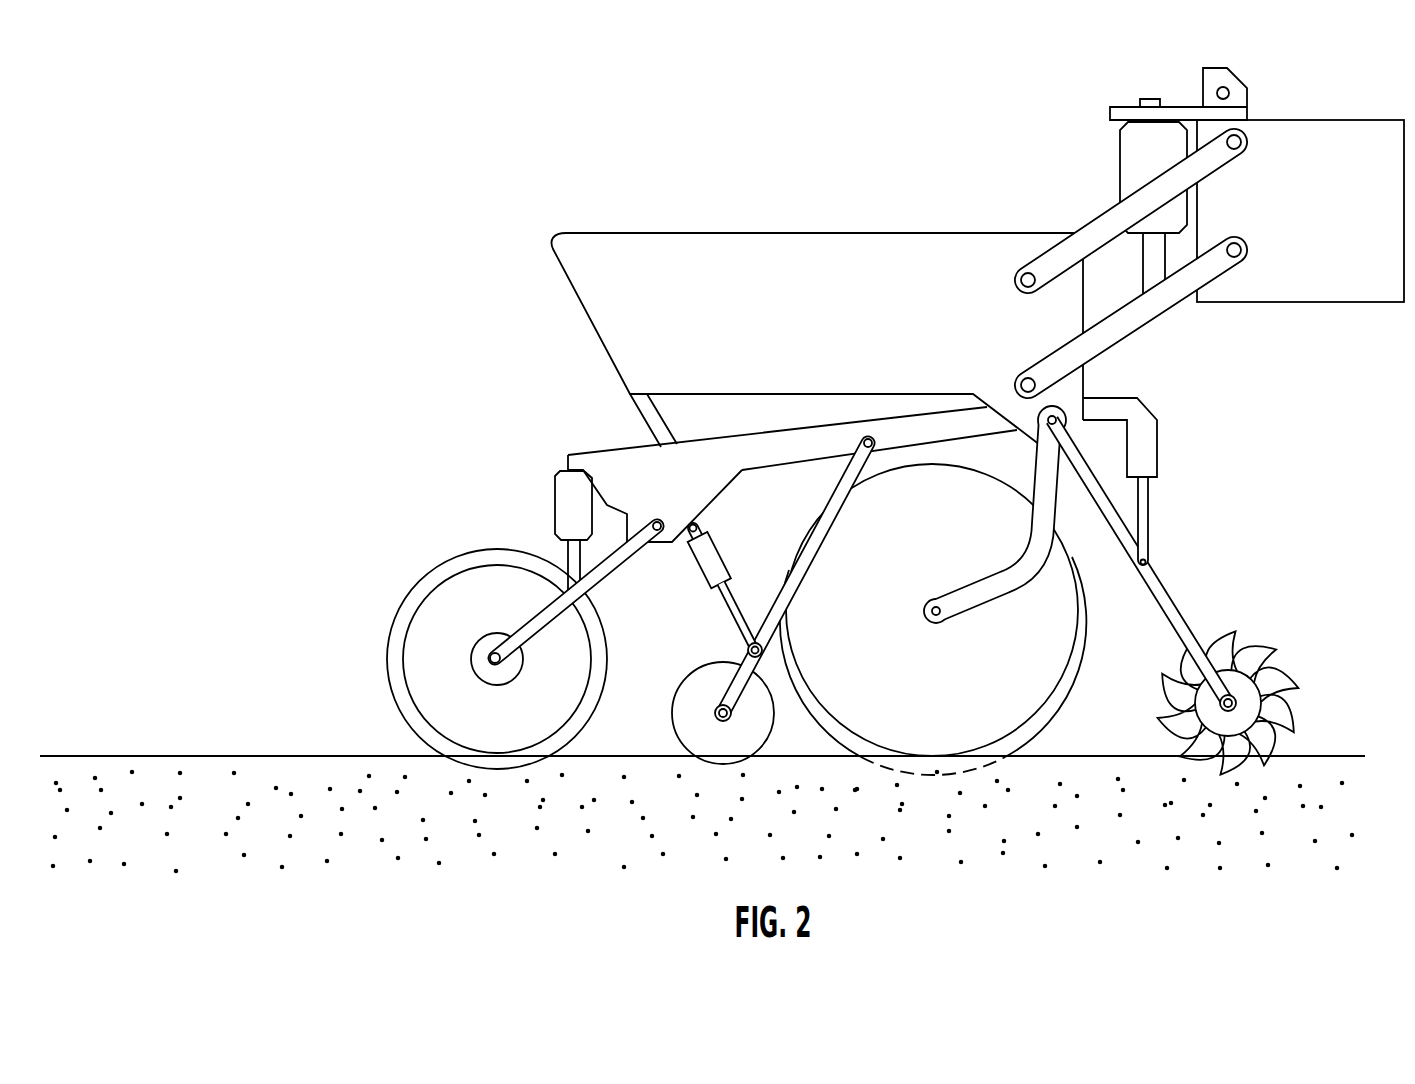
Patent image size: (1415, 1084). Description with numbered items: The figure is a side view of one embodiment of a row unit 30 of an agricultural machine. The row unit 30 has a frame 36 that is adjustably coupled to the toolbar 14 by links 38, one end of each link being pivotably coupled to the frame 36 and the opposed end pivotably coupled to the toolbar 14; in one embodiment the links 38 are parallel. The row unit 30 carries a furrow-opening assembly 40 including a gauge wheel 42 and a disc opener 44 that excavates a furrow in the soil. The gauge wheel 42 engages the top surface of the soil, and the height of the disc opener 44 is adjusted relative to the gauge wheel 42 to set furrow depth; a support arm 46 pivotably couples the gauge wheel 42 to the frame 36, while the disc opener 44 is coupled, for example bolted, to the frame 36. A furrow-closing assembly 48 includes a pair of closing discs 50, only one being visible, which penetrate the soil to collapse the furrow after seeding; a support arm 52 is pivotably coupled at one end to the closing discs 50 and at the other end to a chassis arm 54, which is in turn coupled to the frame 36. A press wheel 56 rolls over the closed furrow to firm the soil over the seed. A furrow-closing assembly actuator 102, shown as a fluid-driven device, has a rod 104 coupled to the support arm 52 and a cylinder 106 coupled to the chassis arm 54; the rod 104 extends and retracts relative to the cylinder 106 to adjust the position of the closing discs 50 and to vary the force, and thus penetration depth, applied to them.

The toolbar 14 is at (1330, 120).
The row unit 30 is at (636, 153).
The frame 36 is at (822, 233).
The links 38 is at (1220, 246).
The furrow-opening assembly 40 is at (1104, 680).
The gauge wheel 42 is at (1088, 577).
The disc opener 44 is at (868, 770).
The support arm 46 is at (977, 607).
The furrow-closing assembly 48 is at (666, 649).
The closing disc 50 is at (672, 731).
The support arm 52 is at (808, 527).
The chassis arm 54 is at (610, 447).
The press wheel 56 is at (392, 698).
The furrow-closing assembly actuator 102 is at (730, 582).
The rod 104 is at (744, 613).
The cylinder 106 is at (719, 552).